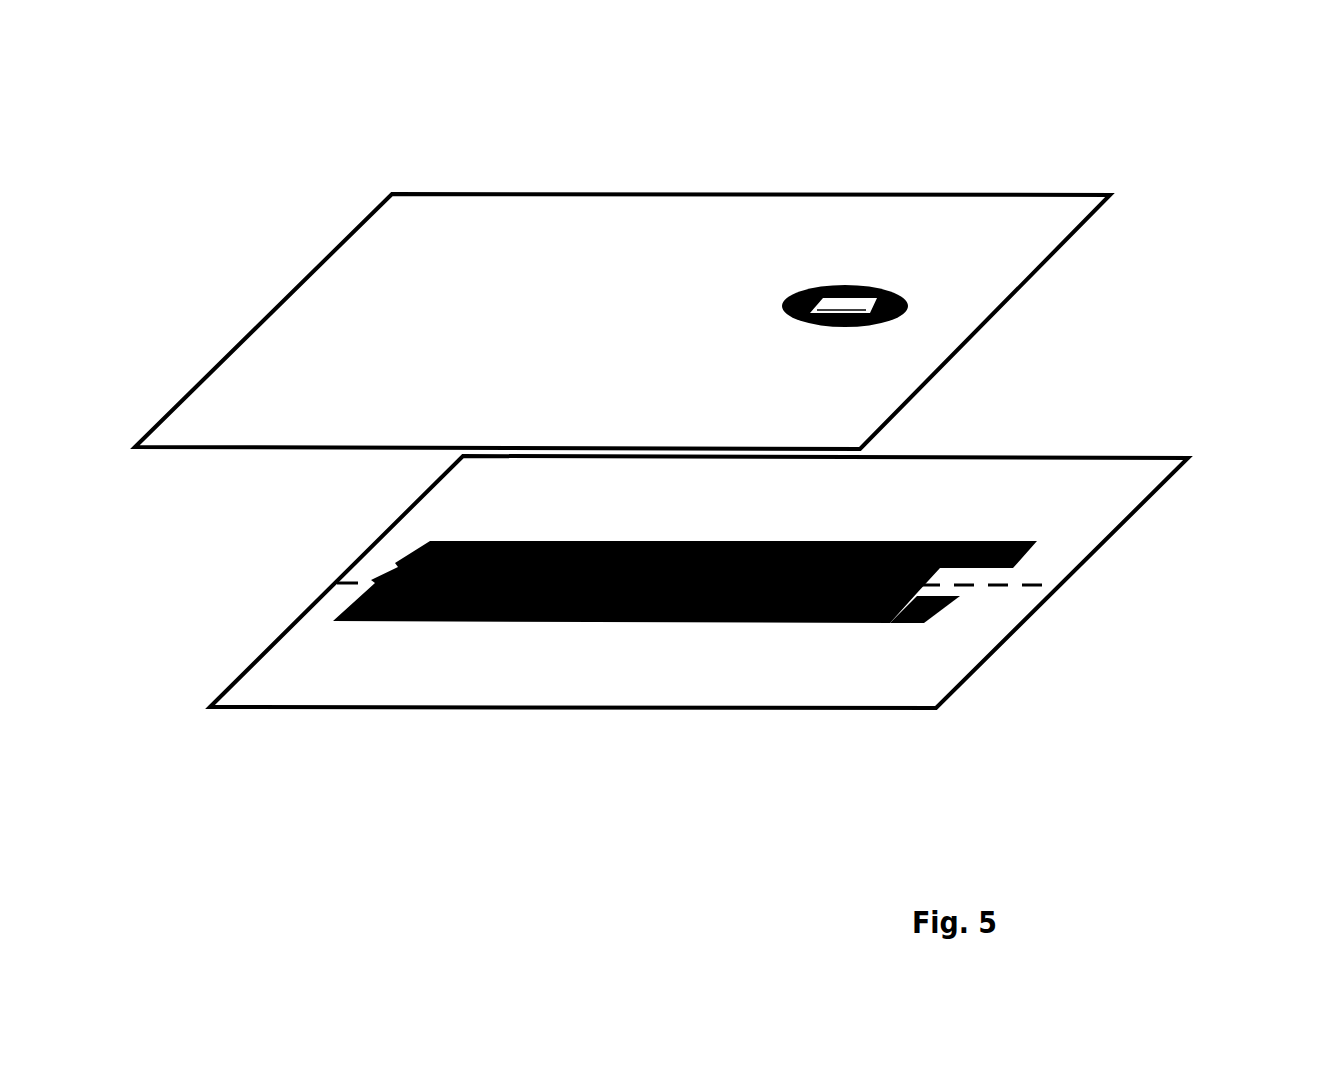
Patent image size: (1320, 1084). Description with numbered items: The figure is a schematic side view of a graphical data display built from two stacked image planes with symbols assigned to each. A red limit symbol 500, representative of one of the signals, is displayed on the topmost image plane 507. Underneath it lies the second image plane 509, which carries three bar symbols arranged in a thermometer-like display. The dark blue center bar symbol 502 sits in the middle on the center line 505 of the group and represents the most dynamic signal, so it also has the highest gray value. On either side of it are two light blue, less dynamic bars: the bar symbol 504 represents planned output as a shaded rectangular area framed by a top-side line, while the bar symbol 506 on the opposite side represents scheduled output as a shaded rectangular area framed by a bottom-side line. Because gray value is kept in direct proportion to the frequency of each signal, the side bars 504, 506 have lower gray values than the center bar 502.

The red limit symbol 500 is at (850, 287).
The center bar symbol 502 is at (383, 582).
The bar symbol 504 is at (1037, 542).
The center line 505 is at (875, 623).
The bar symbol 506 is at (940, 613).
The topmost image plane 507 is at (1037, 195).
The second image plane 509 is at (1082, 456).